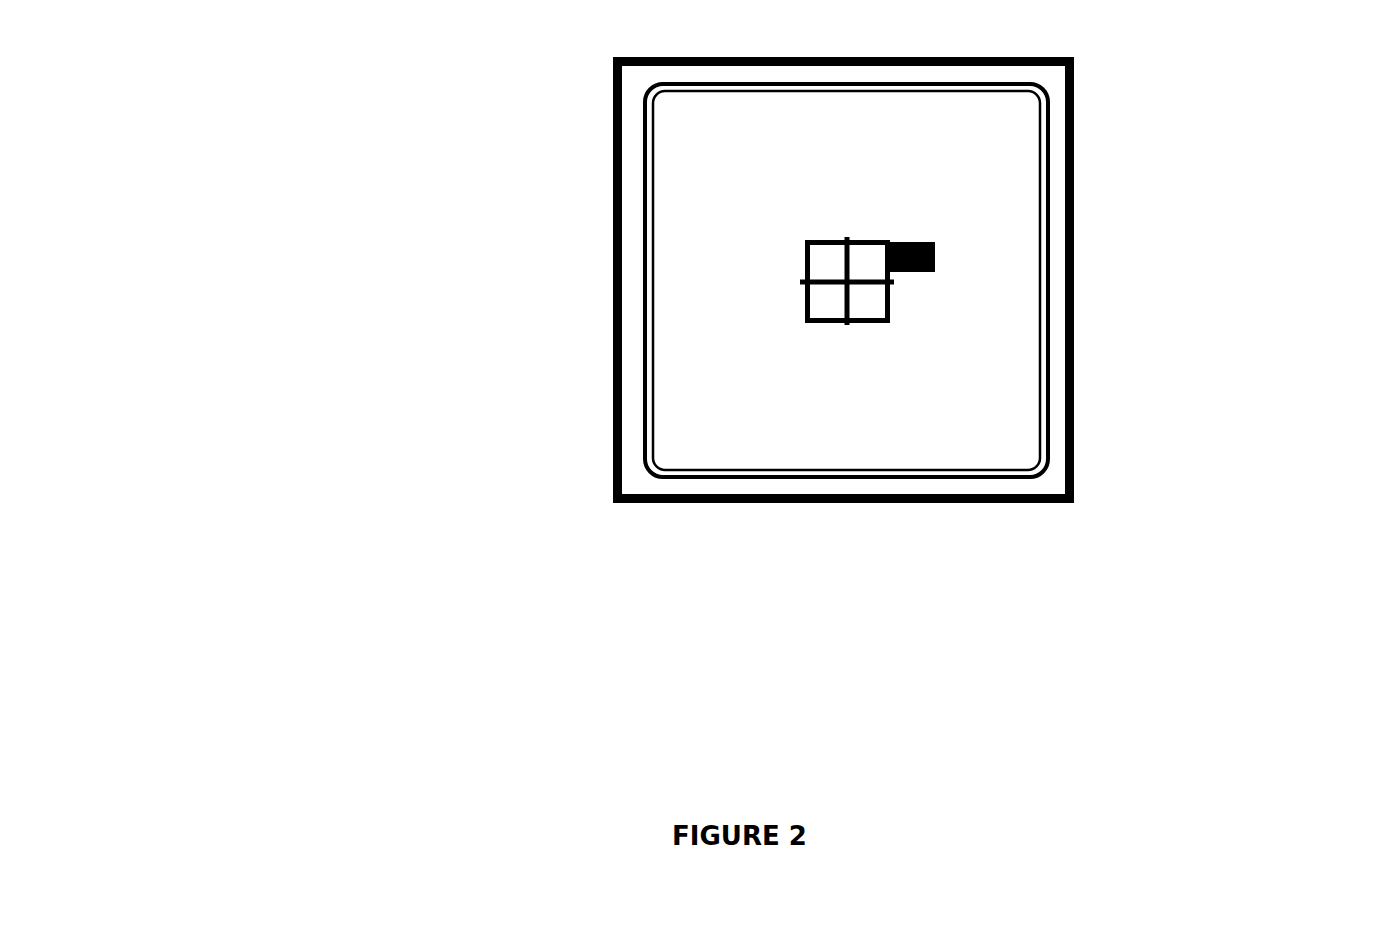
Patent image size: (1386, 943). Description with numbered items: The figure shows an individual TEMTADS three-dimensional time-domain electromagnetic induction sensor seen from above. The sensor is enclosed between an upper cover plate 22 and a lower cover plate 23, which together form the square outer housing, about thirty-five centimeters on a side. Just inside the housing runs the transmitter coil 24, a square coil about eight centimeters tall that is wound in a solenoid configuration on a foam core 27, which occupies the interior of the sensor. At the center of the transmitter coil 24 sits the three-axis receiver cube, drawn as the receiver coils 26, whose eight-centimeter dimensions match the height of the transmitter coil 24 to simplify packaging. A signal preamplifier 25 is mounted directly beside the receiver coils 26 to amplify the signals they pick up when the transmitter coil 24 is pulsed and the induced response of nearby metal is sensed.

The upper cover plate 22 is at (612, 248).
The lower cover plate 23 is at (844, 280).
The transmitter coil 24 is at (645, 400).
The signal preamplifier 25 is at (942, 245).
The receiver coils 26 is at (1082, 326).
The foam core 27 is at (972, 115).